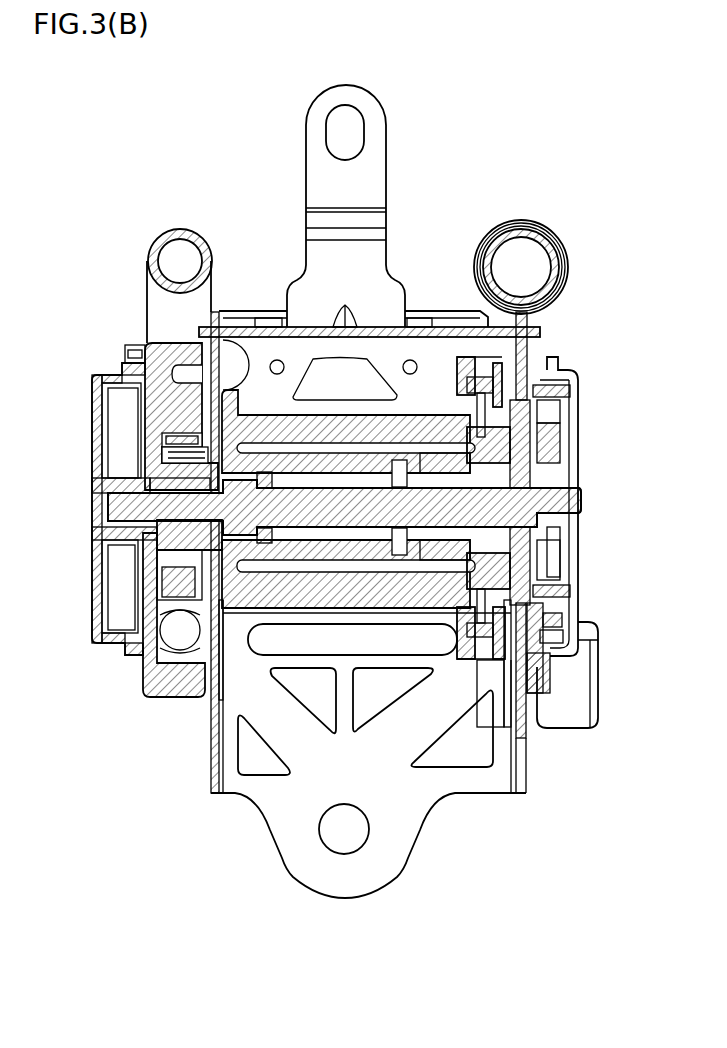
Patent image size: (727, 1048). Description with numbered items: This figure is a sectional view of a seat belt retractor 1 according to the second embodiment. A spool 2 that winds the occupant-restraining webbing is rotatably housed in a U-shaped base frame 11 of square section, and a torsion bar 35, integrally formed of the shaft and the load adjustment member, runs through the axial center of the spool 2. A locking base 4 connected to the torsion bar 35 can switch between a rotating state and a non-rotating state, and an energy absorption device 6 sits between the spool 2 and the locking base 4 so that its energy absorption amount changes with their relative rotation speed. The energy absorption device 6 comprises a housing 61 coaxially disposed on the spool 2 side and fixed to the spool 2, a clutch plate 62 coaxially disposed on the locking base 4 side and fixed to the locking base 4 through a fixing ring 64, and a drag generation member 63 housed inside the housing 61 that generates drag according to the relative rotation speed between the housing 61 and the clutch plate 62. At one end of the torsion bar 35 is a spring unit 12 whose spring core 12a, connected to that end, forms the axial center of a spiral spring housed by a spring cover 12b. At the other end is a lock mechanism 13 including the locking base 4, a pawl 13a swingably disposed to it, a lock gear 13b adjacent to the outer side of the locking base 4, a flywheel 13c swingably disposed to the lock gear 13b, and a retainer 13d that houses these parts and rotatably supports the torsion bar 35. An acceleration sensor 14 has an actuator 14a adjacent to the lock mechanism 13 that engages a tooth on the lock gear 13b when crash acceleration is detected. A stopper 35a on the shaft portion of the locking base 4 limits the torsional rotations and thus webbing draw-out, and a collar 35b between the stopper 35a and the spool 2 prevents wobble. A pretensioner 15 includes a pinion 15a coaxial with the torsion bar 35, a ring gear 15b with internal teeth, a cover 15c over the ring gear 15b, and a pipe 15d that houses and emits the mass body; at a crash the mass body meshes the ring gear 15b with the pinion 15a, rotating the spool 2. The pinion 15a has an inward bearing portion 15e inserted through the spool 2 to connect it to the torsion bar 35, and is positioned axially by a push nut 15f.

The seat belt retractor 1 is at (520, 151).
The spool 2 is at (343, 414).
The locking base 4 is at (560, 462).
The energy absorption device 6 is at (466, 352).
The base frame 11 is at (212, 759).
The spring unit 12 is at (88, 380).
The spring core 12a is at (118, 540).
The spring cover 12b is at (92, 576).
The lock mechanism 13 is at (579, 360).
The pawl 13a is at (568, 436).
The lock gear 13b is at (575, 390).
The flywheel 13c is at (568, 558).
The retainer 13d is at (578, 583).
The acceleration sensor 14 is at (600, 688).
The actuator 14a is at (580, 640).
The pretensioner 15 is at (134, 321).
The pinion 15a is at (160, 470).
The ring gear 15b is at (160, 445).
The cover 15c is at (147, 687).
The pipe 15d is at (143, 283).
The bearing portion 15e is at (246, 630).
The push nut 15f is at (200, 485).
The torsion bar 35 is at (344, 554).
The stopper 35a is at (427, 560).
The collar 35b is at (400, 560).
The housing 61 is at (460, 381).
The clutch plate 62 is at (455, 405).
The drag generation member 63 is at (472, 655).
The fixing ring 64 is at (488, 508).